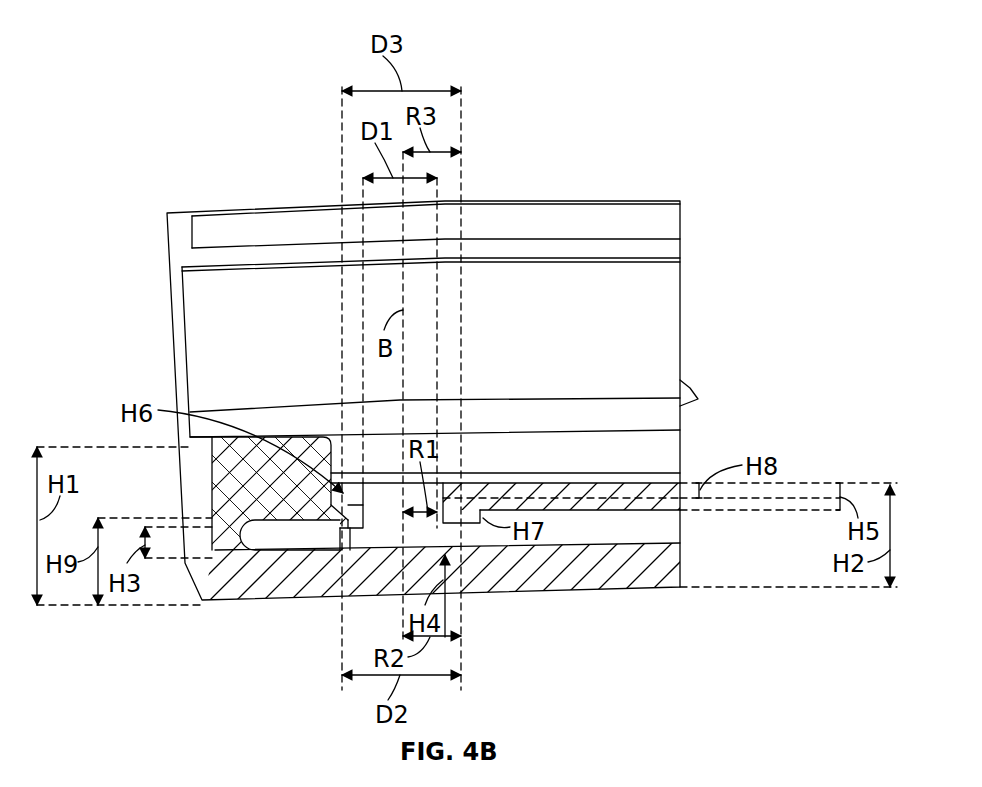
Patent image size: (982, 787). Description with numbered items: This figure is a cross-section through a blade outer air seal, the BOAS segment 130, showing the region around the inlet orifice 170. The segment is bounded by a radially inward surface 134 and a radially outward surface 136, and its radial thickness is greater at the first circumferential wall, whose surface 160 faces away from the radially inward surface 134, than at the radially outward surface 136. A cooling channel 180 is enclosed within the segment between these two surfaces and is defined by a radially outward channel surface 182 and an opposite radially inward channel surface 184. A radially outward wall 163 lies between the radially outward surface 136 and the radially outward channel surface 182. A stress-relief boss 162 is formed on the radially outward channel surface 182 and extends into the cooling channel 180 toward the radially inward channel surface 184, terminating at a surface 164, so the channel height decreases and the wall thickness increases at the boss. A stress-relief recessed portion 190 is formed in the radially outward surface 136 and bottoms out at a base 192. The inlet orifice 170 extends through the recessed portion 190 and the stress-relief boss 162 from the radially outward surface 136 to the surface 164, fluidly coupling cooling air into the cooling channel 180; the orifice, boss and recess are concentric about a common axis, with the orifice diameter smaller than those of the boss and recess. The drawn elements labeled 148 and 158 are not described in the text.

The BOAS segment 130 is at (210, 85).
The radially inward surface 134 is at (652, 588).
The radially outward surface 136 is at (605, 473).
The inner housing 148 is at (287, 322).
The top cover layer 158 is at (497, 222).
The surface of the first circumferential wall 160 is at (280, 437).
The stress-relief boss 162 is at (363, 505).
The radially outward wall 163 is at (537, 473).
The surface of the stress-relief boss 164 is at (350, 545).
The inlet orifice 170 is at (372, 462).
The cooling channel 180 is at (664, 522).
The radially outward channel surface 182 is at (558, 512).
The radially inward channel surface 184 is at (577, 543).
The stress-relief recessed portion 190 is at (343, 493).
The base of the stress-relief recessed portion 192 is at (443, 518).